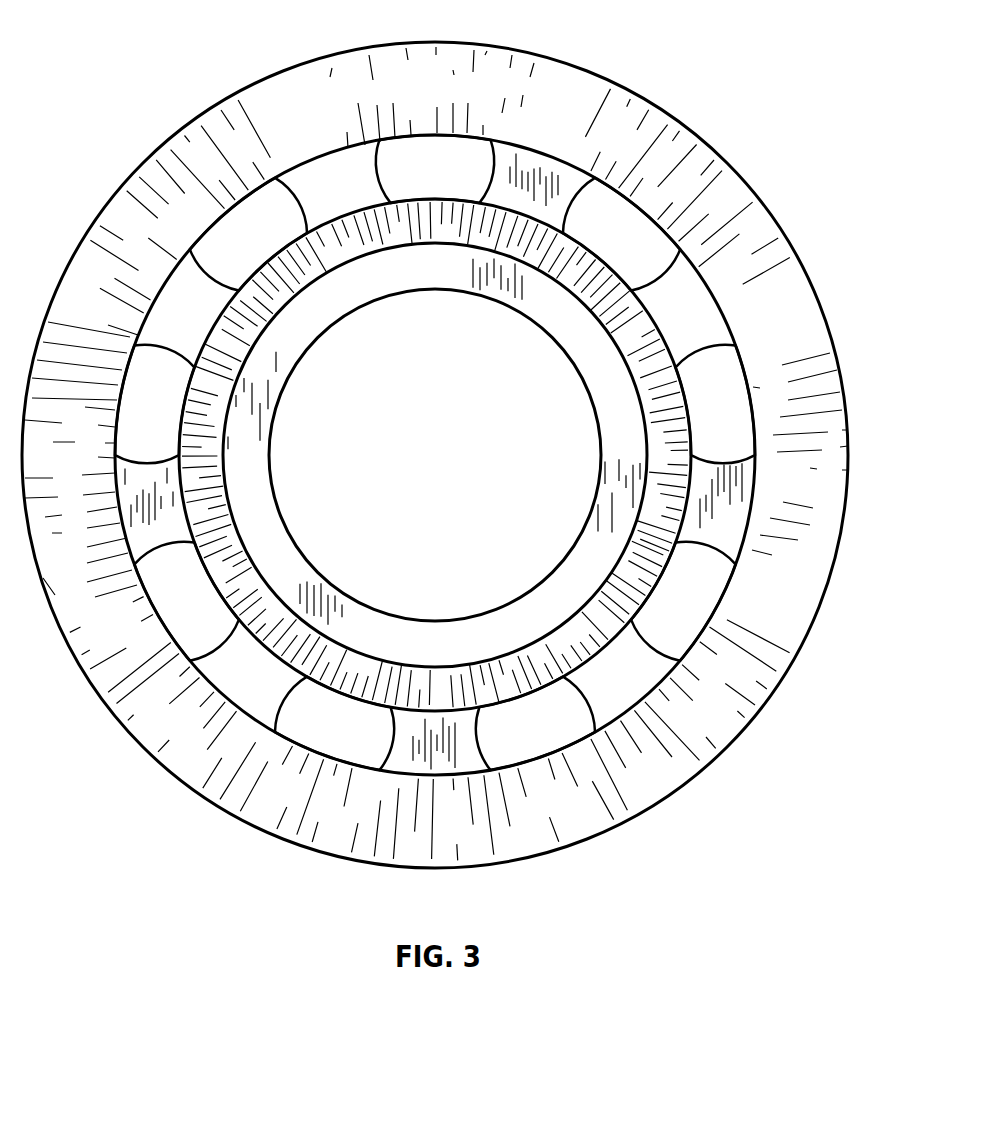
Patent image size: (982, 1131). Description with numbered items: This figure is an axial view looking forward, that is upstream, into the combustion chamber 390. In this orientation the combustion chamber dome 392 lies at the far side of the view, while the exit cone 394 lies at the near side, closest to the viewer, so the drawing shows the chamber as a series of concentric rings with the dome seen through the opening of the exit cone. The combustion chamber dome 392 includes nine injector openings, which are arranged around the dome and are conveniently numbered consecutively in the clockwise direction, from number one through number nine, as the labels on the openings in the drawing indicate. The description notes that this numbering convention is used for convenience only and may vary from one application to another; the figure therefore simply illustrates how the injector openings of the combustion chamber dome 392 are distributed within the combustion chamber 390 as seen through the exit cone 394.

The combustion chamber 390 is at (211, 100).
The combustion chamber dome 392 is at (517, 162).
The exit cone 394 is at (640, 322).